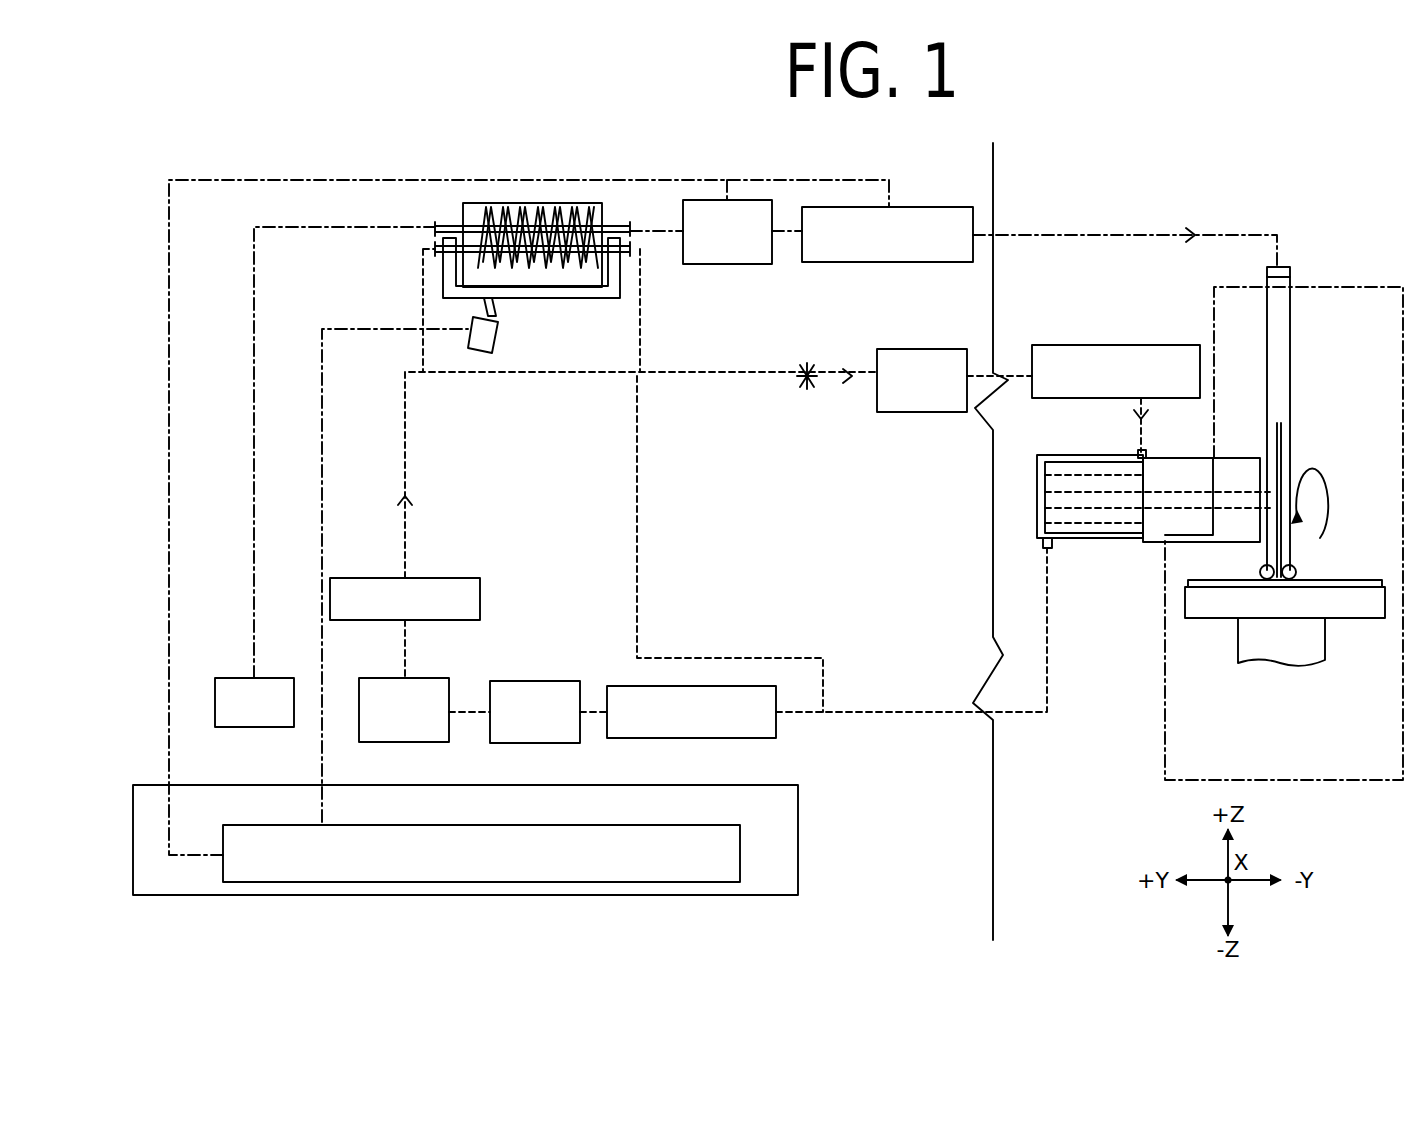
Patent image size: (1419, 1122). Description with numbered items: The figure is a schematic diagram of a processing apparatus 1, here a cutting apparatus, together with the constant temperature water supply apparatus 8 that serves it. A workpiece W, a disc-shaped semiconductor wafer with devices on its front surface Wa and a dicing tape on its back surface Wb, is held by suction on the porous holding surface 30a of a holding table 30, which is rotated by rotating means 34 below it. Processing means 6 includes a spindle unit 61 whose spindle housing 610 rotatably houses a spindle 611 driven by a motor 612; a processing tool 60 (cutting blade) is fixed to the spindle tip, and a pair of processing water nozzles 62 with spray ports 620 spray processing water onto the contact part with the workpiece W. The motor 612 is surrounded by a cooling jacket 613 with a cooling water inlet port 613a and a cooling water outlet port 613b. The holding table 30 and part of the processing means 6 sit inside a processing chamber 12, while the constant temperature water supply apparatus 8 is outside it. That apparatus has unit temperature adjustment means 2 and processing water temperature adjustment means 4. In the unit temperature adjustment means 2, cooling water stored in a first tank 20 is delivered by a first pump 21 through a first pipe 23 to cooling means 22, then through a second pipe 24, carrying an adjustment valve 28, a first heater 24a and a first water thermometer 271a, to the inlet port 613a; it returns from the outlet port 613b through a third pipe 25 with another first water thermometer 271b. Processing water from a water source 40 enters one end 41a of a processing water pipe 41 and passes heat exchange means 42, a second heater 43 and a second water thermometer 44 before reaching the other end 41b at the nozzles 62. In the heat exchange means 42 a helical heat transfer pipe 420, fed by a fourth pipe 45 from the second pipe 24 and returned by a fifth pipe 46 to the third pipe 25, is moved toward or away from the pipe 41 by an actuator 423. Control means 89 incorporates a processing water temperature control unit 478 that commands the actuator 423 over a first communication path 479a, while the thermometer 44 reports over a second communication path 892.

The processing apparatus 1 is at (1323, 227).
The unit temperature adjustment means 2 is at (870, 745).
The processing water temperature adjustment means 4 is at (352, 218).
The processing means 6 is at (1230, 410).
The constant temperature water supply apparatus 8 is at (838, 855).
The processing chamber 12 is at (1330, 780).
The first tank 20 is at (583, 728).
The first pump 21 is at (448, 728).
The cooling means 22 is at (480, 592).
The first pipe 23 is at (408, 640).
The second pipe 24 is at (697, 380).
The first heater 24a is at (905, 349).
The third pipe 25 is at (1030, 715).
The adjustment valve 28 is at (802, 385).
The holding table 30 is at (1200, 618).
The holding surface 30a is at (1340, 583).
The rotating means 34 is at (1315, 660).
The water source 40 is at (240, 728).
The processing water pipe 41 is at (613, 228).
The one end of processing water pipe 41a is at (250, 658).
The other end of processing water pipe 41b is at (1280, 248).
The heat exchange means 42 is at (617, 277).
The second heater 43 is at (757, 264).
The second water thermometer 44 is at (905, 262).
The fourth pipe 45 is at (423, 293).
The fifth pipe 46 is at (640, 603).
The processing tool 60 is at (1283, 428).
The spindle unit 61 is at (1147, 557).
The processing water nozzles 62 is at (1330, 540).
The control means 89 is at (538, 895).
The first water thermometer 271a is at (1065, 345).
The first water thermometer 271b is at (778, 738).
The heat transfer pipe 420 is at (593, 273).
The actuator 423 is at (490, 332).
The processing water temperature control unit 478 is at (445, 882).
The first communication path 479a is at (322, 490).
The spindle housing 610 is at (1182, 457).
The spindle 611 is at (1295, 457).
The motor 612 is at (1110, 527).
The cooling jacket 613 is at (1060, 457).
The cooling water inlet port 613a is at (1135, 450).
The cooling water outlet port 613b is at (1052, 548).
The spray ports 620 is at (1313, 663).
The second communication path 892 is at (690, 182).
The workpiece W is at (1218, 590).
The front surface Wa is at (1245, 575).
The back surface Wb is at (1345, 610).